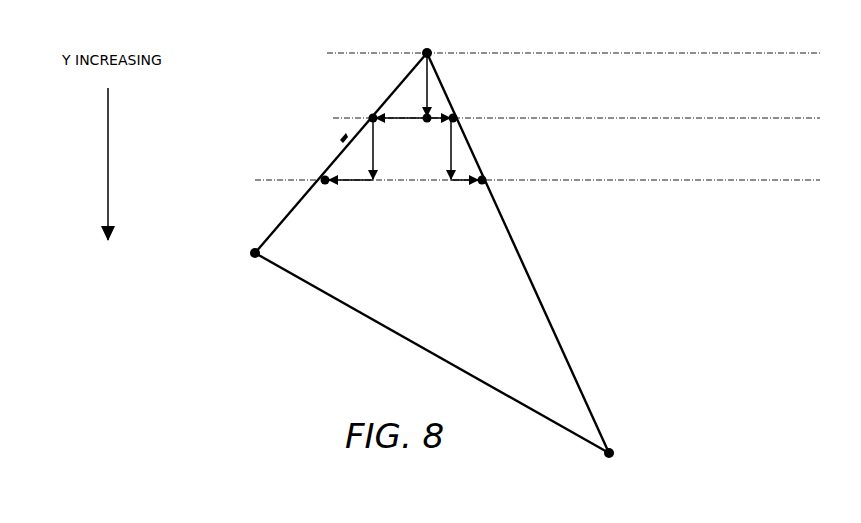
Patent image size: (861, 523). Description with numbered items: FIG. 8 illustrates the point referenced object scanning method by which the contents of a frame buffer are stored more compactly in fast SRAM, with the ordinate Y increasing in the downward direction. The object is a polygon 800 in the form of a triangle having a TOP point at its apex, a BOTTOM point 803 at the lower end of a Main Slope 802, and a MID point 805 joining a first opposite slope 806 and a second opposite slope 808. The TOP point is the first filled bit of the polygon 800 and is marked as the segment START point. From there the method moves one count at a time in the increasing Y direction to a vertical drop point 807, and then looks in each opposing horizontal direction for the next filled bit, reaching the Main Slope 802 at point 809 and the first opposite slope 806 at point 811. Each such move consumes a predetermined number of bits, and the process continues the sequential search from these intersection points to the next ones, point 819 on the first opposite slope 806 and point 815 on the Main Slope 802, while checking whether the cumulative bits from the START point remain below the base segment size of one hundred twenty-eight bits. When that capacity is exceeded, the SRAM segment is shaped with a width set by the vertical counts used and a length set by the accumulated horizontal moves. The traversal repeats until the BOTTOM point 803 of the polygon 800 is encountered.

The polygon 800 is at (435, 235).
The Main Slope 802 is at (532, 264).
The BOTTOM point 803 is at (612, 445).
The MID point 805 is at (255, 245).
The first opposite slope 806 is at (342, 140).
The vertical drop point 807 is at (427, 123).
The second opposite slope 808 is at (335, 308).
The intersection point on main slope 809 is at (456, 114).
The intersection point on first opposite slope 811 is at (372, 113).
The next intersection point on main slope 815 is at (489, 179).
The next intersection point on first opposite slope 819 is at (321, 177).